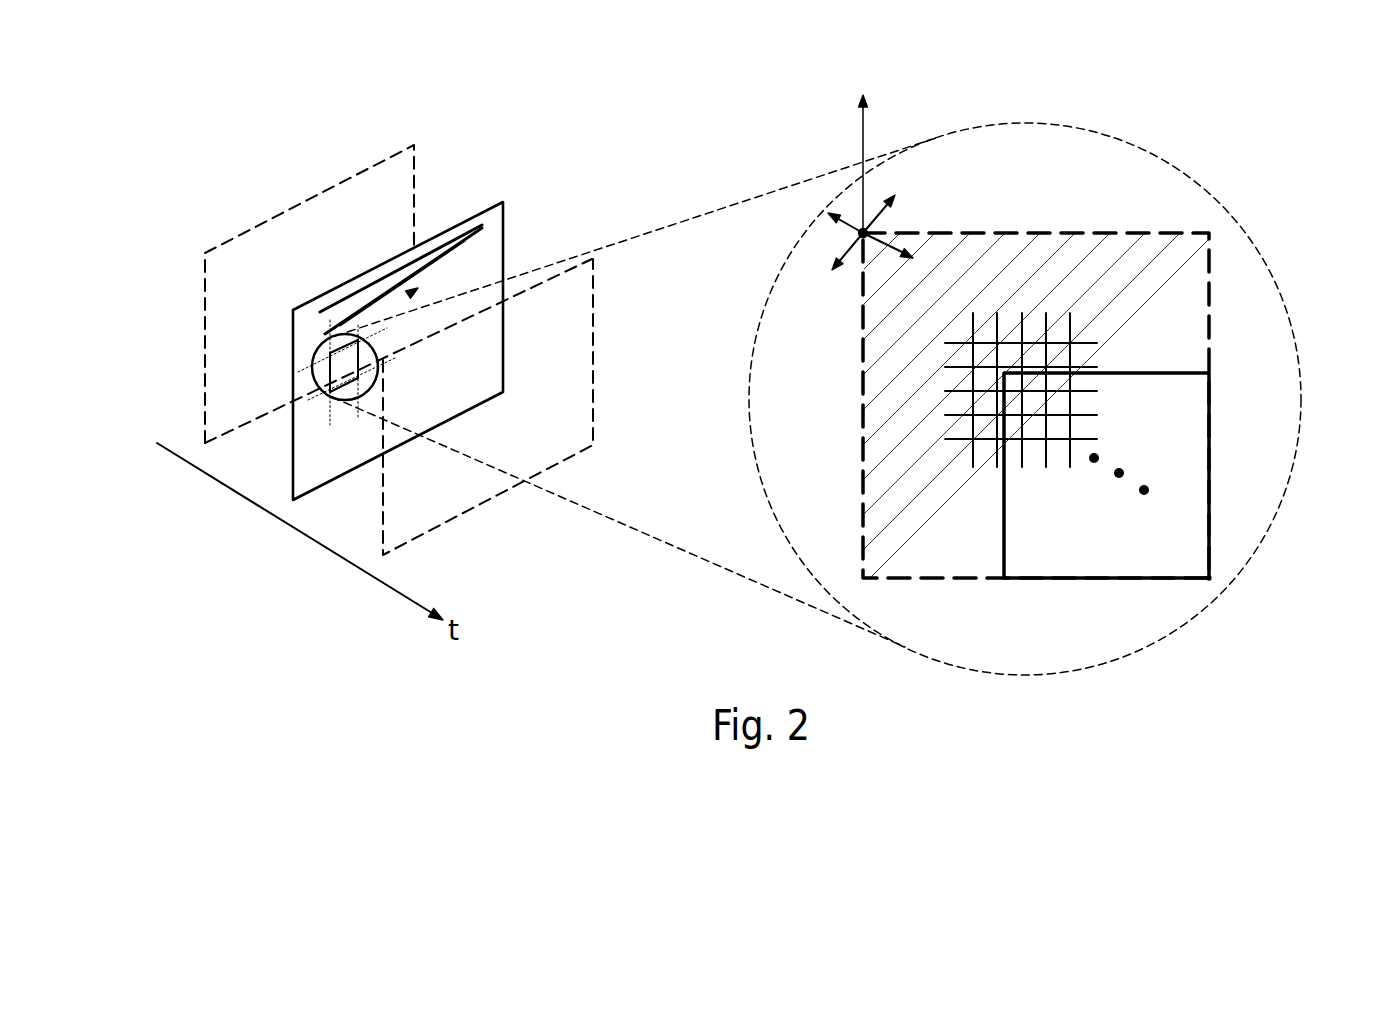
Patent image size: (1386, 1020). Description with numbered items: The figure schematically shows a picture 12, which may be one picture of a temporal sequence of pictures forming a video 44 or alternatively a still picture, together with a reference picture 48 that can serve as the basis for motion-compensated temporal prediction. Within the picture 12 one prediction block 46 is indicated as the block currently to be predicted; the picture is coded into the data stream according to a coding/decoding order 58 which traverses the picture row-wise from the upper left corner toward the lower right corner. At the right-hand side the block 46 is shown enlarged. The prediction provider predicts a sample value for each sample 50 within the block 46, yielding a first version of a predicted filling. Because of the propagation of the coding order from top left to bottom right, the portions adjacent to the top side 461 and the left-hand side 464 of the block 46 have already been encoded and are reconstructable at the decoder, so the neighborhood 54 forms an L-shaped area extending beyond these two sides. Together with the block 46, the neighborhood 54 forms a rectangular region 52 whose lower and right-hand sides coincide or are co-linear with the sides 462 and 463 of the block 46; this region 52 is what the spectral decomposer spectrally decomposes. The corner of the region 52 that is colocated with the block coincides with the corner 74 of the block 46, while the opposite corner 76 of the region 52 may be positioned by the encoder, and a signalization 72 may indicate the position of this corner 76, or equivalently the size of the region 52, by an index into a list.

The picture 12 is at (460, 223).
The video 44 is at (597, 206).
The prediction block 46 is at (343, 375).
The top side 461 is at (1160, 373).
The right-hand side 462 is at (1210, 471).
The bottom side 463 is at (1080, 578).
The left-hand side 464 is at (1003, 517).
The reference picture 48 is at (300, 203).
The sample 50 is at (988, 383).
The region 52 is at (1020, 233).
The neighborhood 54 is at (1072, 248).
The coding/decoding order 58 is at (445, 260).
The signalization 72 is at (864, 137).
The corner of block 74 is at (1210, 580).
The corner of region 76 is at (862, 233).